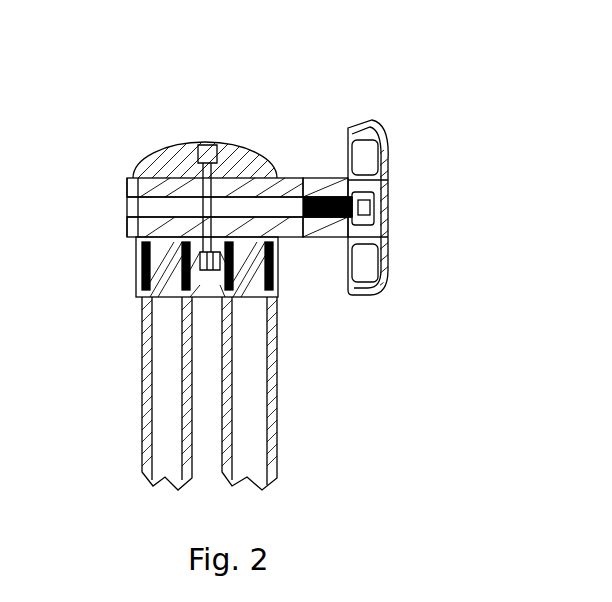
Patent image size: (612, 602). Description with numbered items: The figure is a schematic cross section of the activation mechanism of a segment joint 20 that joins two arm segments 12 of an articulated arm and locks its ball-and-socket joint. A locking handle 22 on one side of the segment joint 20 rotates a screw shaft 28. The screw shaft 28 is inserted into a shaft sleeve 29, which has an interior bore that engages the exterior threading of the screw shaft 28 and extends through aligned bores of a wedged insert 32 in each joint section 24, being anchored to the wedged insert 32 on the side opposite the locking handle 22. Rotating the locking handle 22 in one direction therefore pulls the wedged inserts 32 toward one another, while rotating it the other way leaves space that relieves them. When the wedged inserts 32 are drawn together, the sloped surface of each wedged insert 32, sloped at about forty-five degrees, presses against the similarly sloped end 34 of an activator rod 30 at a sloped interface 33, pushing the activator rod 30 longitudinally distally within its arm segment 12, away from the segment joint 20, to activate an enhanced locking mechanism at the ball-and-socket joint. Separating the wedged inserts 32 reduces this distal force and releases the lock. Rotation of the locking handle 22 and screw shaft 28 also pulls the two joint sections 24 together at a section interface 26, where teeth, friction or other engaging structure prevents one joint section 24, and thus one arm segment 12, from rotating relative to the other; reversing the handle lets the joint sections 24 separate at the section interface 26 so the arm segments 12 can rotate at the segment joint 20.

The segment joint 20 is at (188, 103).
The arm segment 12 is at (143, 387).
The locking handle 22 is at (385, 162).
The joint section 24 is at (163, 148).
The section interface 26 is at (207, 187).
The screw shaft 28 is at (305, 212).
The shaft sleeve 29 is at (273, 215).
The activator rod 30 is at (152, 342).
The wedged insert 32 is at (280, 183).
The sloped interface 33 is at (253, 227).
The sloped end 34 is at (167, 245).